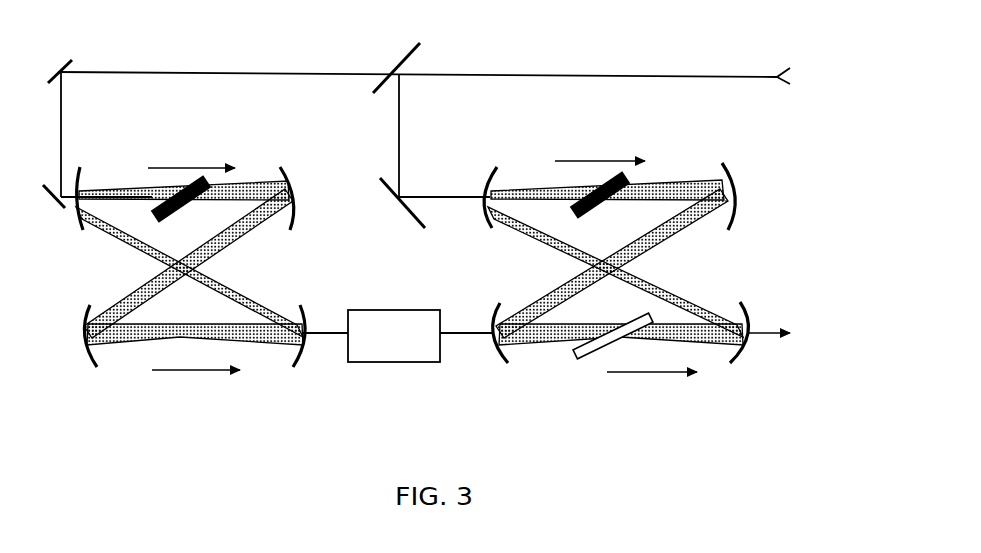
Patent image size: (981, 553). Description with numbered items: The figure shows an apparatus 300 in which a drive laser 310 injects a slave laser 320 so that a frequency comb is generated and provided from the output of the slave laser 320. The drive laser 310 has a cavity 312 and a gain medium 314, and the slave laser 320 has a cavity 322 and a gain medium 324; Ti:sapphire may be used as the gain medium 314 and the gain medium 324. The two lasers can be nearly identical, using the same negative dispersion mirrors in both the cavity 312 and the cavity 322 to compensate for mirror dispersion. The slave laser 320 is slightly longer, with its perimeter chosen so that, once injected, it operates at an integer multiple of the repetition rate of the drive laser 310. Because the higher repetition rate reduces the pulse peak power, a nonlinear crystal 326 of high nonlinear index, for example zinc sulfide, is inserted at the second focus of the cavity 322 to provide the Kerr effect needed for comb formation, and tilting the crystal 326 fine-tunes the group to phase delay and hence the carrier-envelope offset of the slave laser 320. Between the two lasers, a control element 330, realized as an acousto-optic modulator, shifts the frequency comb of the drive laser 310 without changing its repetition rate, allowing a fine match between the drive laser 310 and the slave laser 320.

The apparatus 300 is at (736, 18).
The drive laser 310 is at (188, 390).
The cavity 312 is at (87, 272).
The gain medium 314 is at (177, 182).
The slave laser 320 is at (657, 383).
The cavity 322 is at (488, 264).
The gain medium 324 is at (602, 182).
The nonlinear crystal 326 is at (590, 355).
The control element 330 is at (414, 352).